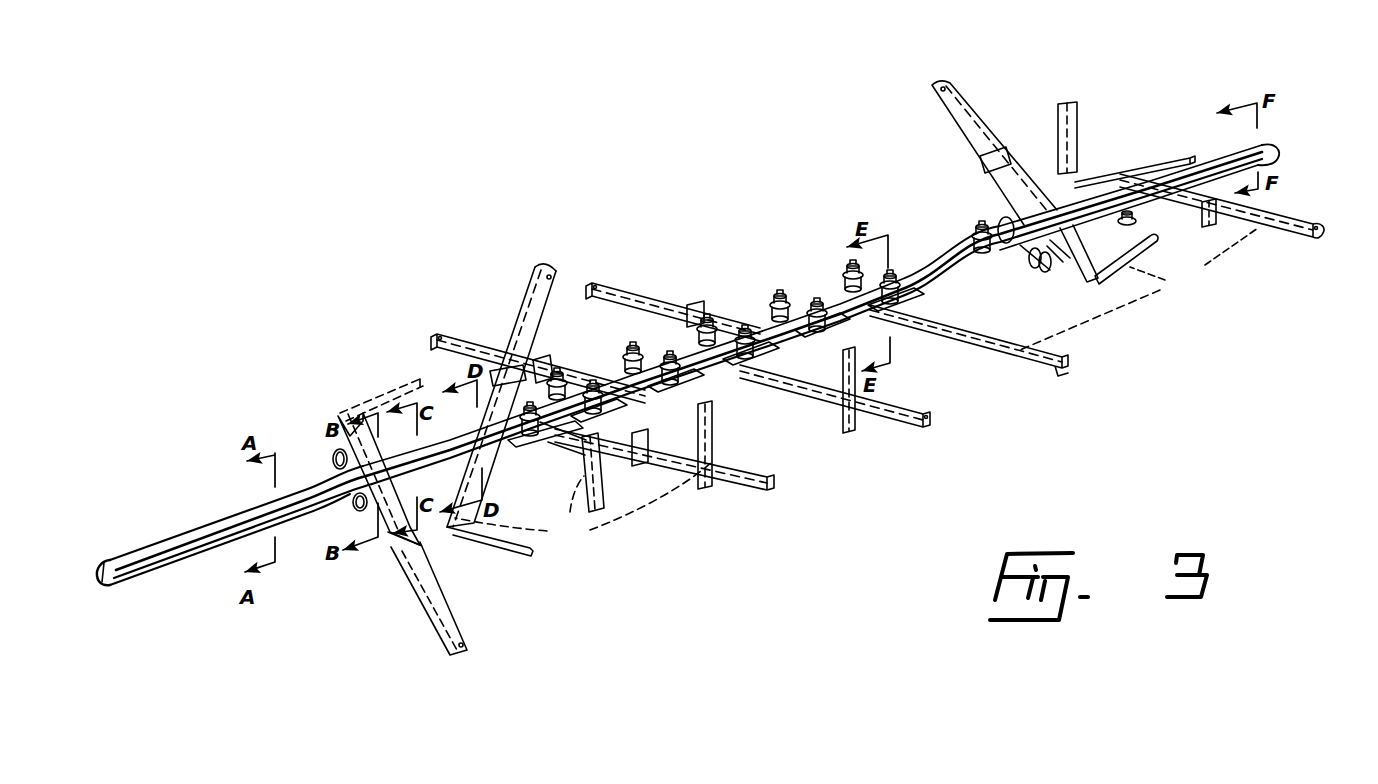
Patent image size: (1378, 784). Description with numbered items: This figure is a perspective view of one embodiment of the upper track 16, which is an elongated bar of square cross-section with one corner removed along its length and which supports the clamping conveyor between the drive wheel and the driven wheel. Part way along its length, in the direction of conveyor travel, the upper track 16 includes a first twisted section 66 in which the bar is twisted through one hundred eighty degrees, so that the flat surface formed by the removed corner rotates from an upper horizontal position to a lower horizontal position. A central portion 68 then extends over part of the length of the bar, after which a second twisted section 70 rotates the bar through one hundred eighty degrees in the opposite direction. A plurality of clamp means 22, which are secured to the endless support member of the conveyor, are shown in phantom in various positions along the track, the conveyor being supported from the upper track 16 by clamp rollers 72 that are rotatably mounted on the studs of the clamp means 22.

The upper track 16 is at (800, 276).
The clamp means 22 is at (856, 386).
The first twisted section 66 is at (397, 545).
The central portion 68 is at (617, 382).
The second twisted section 70 is at (1013, 236).
The clamp rollers 72 is at (773, 317).